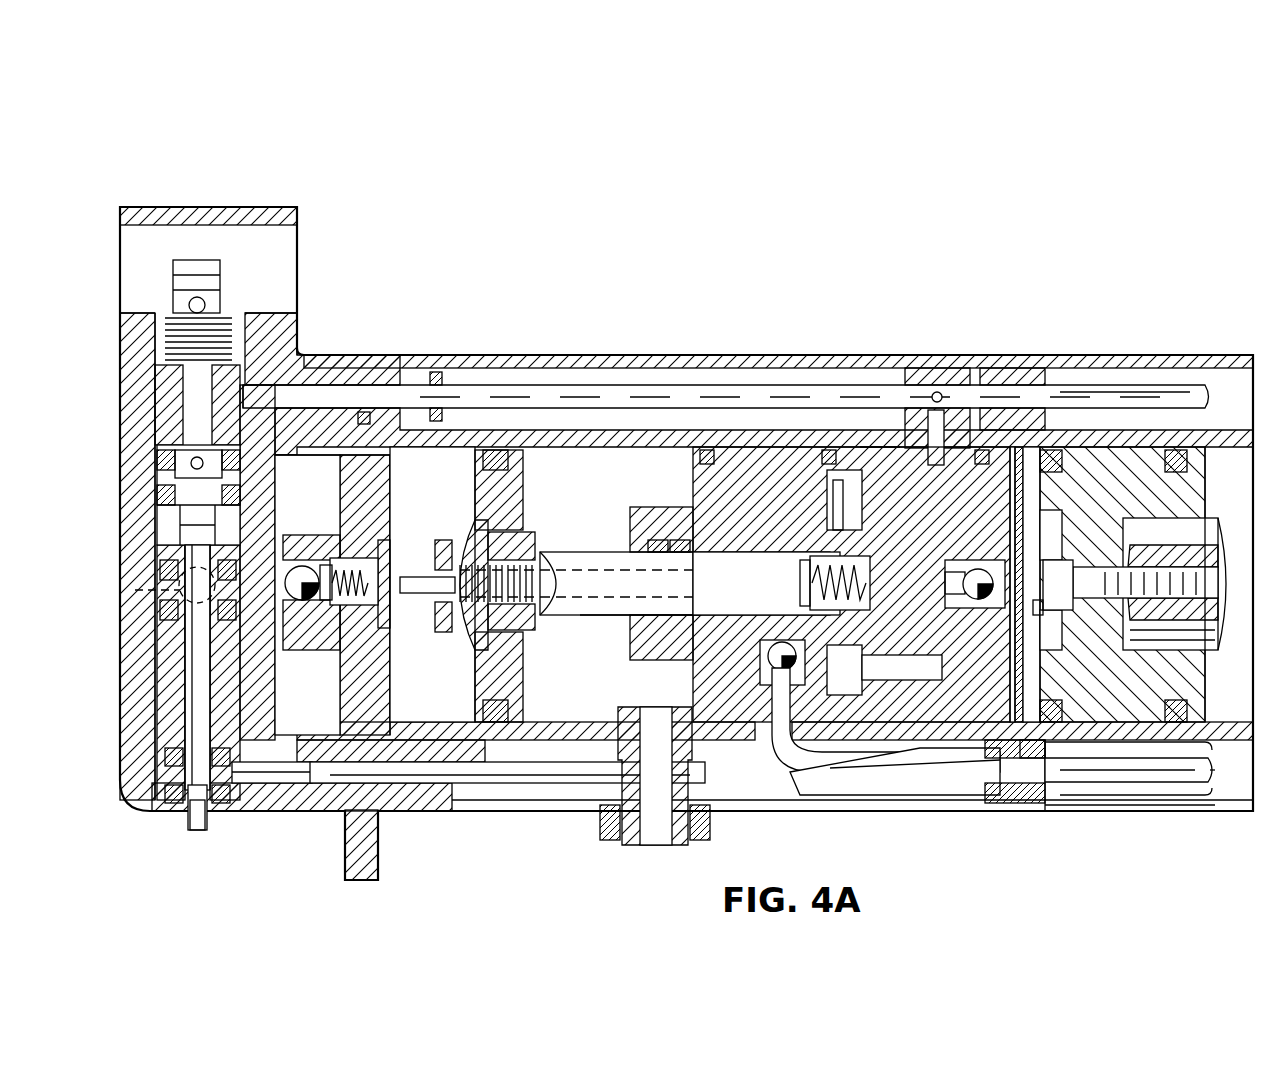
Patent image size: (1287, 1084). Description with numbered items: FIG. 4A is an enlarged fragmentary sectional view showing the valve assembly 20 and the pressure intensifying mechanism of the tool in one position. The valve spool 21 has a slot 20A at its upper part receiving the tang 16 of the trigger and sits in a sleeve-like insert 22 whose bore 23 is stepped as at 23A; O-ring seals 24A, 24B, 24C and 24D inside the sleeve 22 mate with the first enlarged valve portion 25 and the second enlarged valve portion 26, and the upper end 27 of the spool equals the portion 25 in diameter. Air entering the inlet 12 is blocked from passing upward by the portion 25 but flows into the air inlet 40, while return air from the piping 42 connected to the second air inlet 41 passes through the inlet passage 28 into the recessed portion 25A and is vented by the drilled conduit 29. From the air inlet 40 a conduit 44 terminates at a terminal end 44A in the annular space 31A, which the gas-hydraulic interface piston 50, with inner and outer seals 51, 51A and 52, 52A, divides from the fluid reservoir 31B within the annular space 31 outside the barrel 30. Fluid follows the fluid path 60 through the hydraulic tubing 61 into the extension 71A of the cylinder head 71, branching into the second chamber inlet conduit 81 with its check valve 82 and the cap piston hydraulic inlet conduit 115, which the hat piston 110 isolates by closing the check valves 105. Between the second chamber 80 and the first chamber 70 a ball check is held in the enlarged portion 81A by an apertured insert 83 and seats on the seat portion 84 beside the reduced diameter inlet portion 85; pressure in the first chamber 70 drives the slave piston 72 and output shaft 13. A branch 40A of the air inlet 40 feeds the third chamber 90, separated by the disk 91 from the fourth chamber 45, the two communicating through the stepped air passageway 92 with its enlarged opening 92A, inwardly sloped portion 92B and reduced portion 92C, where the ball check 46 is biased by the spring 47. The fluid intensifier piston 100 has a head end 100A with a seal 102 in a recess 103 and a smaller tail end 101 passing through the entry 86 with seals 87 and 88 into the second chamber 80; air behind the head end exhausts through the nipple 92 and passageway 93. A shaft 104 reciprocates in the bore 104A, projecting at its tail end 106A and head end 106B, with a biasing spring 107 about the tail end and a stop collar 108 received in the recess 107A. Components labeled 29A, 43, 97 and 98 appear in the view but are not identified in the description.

The valve assembly 20 is at (211, 248).
The ball 29A is at (194, 296).
The slot 20A is at (222, 290).
The valve spool 21 is at (222, 310).
The upper end of the spool 27 is at (292, 345).
The second air inlet 41 is at (348, 398).
The fourth chamber 45 is at (366, 420).
The disk 91 is at (383, 455).
The third chamber 90 is at (452, 445).
The seal 102 is at (495, 445).
The annular space 31 is at (652, 385).
The cylinder head extension 71A is at (718, 470).
The hat piston 110 is at (830, 455).
The second chamber 80 is at (873, 460).
The pin 43 is at (938, 380).
The cylinder head 71 is at (983, 470).
The outer seal 52A is at (990, 440).
The inner seal 51A is at (1012, 440).
The first chamber 70 is at (1024, 455).
The piping 42 is at (1113, 390).
The slave piston 72 is at (1140, 455).
The barrel 30 is at (1225, 440).
The output shaft 13 is at (1220, 540).
The apertured insert 83 is at (1058, 585).
The enlarged portion of the bore 81A is at (1047, 614).
The O-ring seal 24A is at (165, 462).
The drilled conduit 29 is at (188, 466).
The O-ring seal 24B is at (165, 498).
The first enlarged valve portion 25 is at (180, 516).
The stepped bore portion 23A is at (175, 553).
The inlet 12 is at (135, 590).
The sleeve-like insert 22 is at (157, 678).
The bore 23 is at (185, 705).
The O-ring seal 24C is at (165, 756).
The O-ring seal 24D is at (165, 794).
The second enlarged valve portion 26 is at (198, 838).
The branch of the air inlet 40A is at (262, 772).
The air inlet 40 is at (295, 778).
The tang 16 is at (368, 870).
The conduit 44 is at (494, 778).
The passageway 93 is at (651, 847).
The stepped air passageway 92 is at (692, 847).
The cap piston hydraulic inlet conduit 115 is at (808, 762).
The terminal end 44A is at (932, 785).
The annular space 31A is at (964, 787).
The check valves 105 is at (998, 782).
The outer seal 52 is at (1010, 803).
The gas-hydraulic interface piston 50 is at (1030, 803).
The inner seal 51 is at (1050, 803).
The hydraulic tubing 61 is at (1130, 770).
The fluid reservoir 31B is at (1210, 795).
The fluid path 60 is at (1222, 775).
The inlet passage 28 is at (307, 595).
The reduced diametrical portion 92C is at (335, 558).
The recessed portion 25A is at (332, 479).
The inwardly sloped portion 92B is at (306, 566).
The head end of the shaft 106B is at (428, 568).
The plate 97 is at (388, 550).
The biasing spring 47 is at (365, 598).
The ball check 46 is at (298, 622).
The enlarged opening 92A is at (335, 623).
The flange 98 is at (520, 535).
The tail end 101 is at (586, 556).
The shaft 104 is at (542, 605).
The entry 86 is at (640, 553).
The seal 87 is at (653, 538).
The seal 88 is at (680, 538).
The fluid intensifier piston 100 is at (530, 490).
The recess 103 is at (512, 460).
The bore 104A is at (590, 602).
The head end 100A is at (500, 675).
The check valve 82 is at (968, 592).
The second chamber inlet conduit 81 is at (960, 602).
The stop collar 108 is at (815, 545).
The tail end of the shaft 106A is at (831, 560).
The biasing spring 107 is at (892, 554).
The recess 107A is at (812, 607).
The reduced diameter inlet portion 85 is at (928, 578).
The seat portion 84 is at (962, 578).